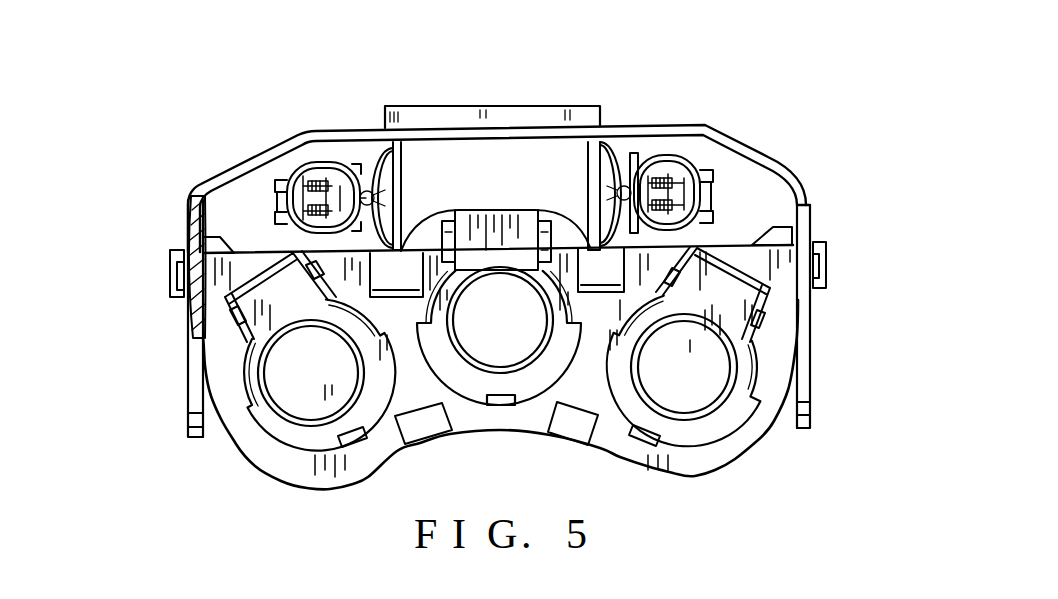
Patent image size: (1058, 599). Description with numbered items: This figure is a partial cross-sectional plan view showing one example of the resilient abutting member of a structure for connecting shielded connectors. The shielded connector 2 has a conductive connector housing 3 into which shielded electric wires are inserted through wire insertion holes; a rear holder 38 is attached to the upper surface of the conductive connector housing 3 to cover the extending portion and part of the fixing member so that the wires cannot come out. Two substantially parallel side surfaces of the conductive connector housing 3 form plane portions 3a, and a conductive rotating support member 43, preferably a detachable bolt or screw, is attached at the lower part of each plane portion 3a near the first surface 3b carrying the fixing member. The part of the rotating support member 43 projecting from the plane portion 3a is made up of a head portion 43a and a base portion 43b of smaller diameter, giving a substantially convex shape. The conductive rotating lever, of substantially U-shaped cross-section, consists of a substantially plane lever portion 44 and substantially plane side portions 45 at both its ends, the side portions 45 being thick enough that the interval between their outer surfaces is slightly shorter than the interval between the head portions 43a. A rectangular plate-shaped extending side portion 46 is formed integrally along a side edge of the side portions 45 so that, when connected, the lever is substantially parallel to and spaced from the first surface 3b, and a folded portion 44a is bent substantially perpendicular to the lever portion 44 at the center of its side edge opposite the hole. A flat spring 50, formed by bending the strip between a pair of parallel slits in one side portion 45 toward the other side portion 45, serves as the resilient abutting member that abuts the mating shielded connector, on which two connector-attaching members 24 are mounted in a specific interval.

The shielded connector 2 is at (501, 405).
The conductive connector housing 3 is at (693, 476).
The plane portion 3a is at (190, 365).
The first surface 3b is at (258, 250).
The connector-attaching member 24 is at (330, 156).
The rear holder 38 is at (294, 450).
The rotating support member 43 is at (868, 234).
The head portion 43a is at (820, 250).
The base portion 43b is at (816, 290).
The lever portion 44 is at (322, 162).
The folded portion 44a is at (470, 106).
The side portion 45 is at (186, 395).
The extending side portion 46 is at (190, 212).
The flat spring 50 is at (196, 238).